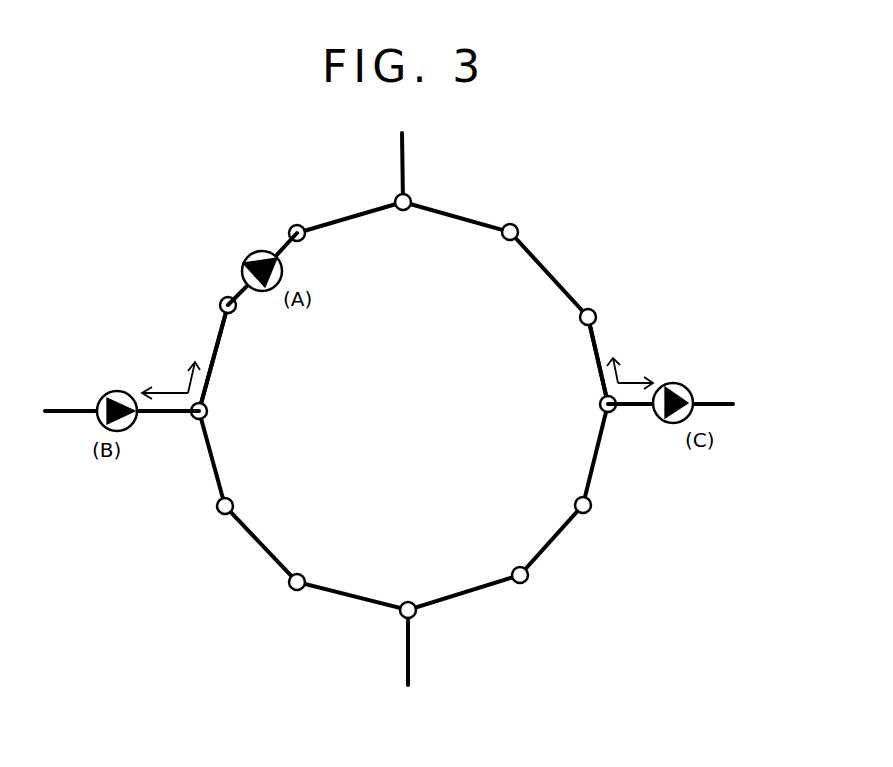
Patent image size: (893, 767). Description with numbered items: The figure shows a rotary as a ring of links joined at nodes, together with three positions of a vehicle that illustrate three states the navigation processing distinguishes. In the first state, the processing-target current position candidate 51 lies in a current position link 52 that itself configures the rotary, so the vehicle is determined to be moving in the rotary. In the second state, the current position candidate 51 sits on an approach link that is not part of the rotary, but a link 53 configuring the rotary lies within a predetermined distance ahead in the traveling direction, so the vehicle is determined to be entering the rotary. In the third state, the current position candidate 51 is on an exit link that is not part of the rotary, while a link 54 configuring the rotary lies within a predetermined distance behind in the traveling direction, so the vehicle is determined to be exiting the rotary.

The processing-target current position candidate 51 is at (258, 252).
The current position link 52 is at (222, 297).
The link configuring the rotary 53 is at (218, 330).
The link configuring the rotary 54 is at (598, 338).